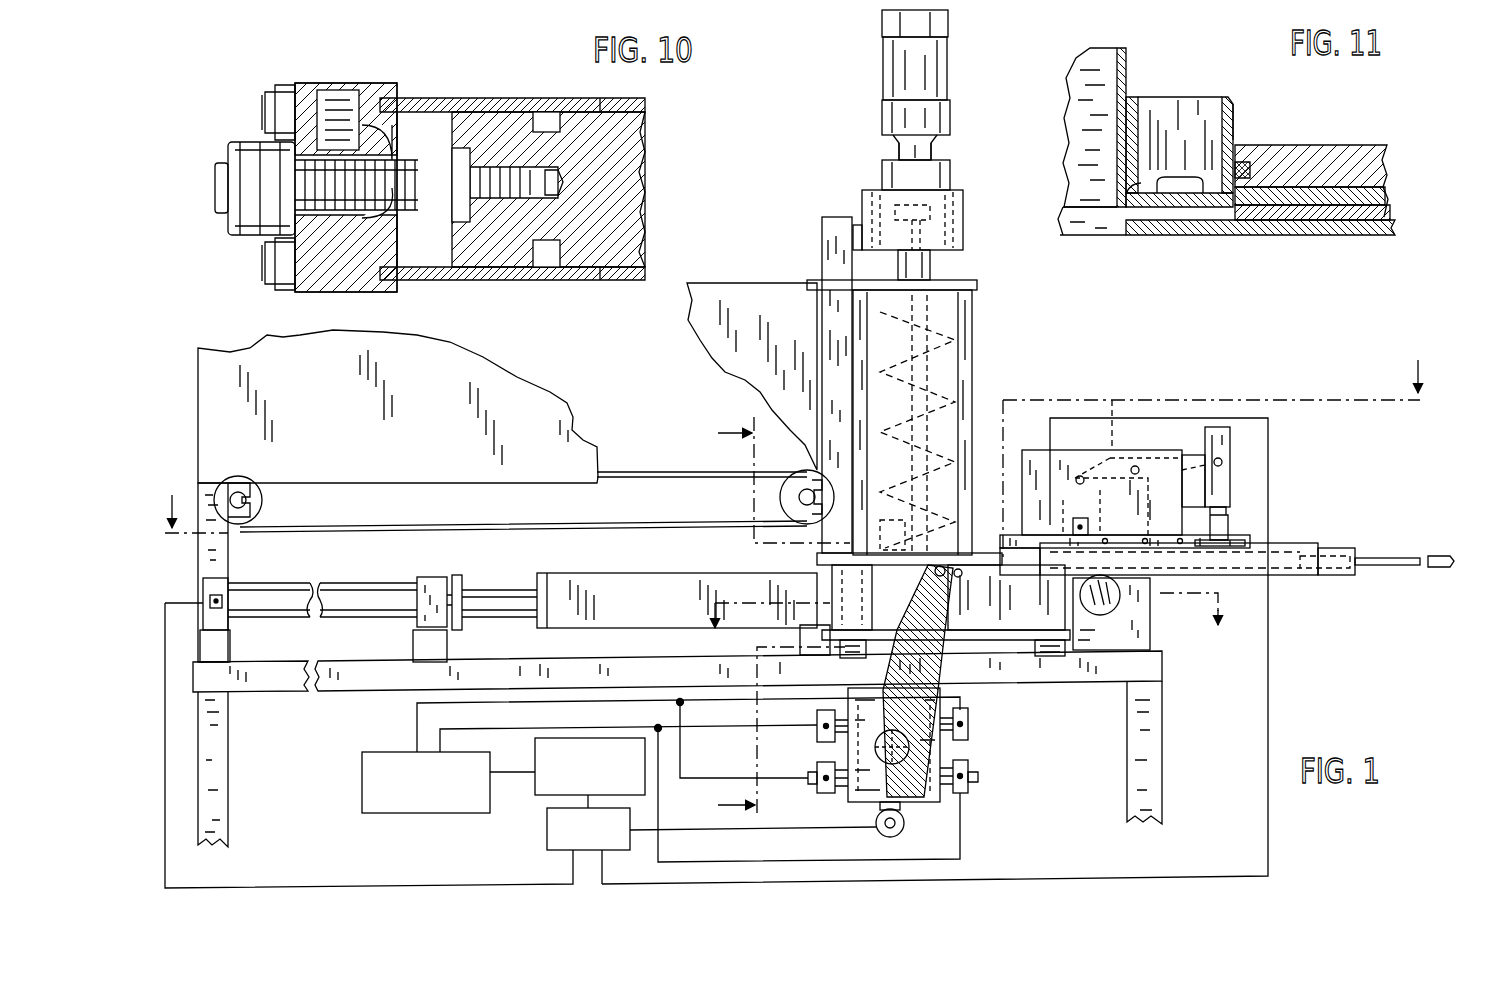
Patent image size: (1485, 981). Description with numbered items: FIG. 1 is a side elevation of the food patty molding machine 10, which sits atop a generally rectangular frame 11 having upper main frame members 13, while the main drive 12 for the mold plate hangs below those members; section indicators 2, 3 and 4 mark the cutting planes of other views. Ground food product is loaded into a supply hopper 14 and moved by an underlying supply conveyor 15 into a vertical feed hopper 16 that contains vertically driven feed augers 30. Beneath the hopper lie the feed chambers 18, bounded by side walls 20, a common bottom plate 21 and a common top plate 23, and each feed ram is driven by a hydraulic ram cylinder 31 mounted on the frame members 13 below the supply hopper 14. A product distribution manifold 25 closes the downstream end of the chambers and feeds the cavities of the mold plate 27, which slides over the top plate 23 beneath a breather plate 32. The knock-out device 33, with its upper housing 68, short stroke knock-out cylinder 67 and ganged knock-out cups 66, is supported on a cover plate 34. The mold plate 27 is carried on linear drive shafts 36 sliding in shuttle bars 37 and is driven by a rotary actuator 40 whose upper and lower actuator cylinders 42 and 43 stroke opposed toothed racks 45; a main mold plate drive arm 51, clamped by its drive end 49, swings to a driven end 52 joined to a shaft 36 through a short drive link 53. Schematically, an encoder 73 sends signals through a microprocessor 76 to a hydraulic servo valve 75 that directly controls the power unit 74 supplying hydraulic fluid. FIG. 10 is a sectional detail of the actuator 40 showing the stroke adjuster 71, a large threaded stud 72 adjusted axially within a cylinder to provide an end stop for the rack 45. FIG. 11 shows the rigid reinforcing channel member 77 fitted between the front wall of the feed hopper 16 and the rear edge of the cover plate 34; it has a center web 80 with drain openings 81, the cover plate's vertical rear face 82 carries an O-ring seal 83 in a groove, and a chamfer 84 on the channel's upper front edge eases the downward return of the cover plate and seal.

In FIG. 1, the section line 2- 2 is at (789, 431).
In FIG. 1, the section line 3- 3 is at (966, 625).
In FIG. 1, the section line 4- 4 is at (771, 617).
In FIG. 1, the patty molding machine 10 is at (982, 392).
In FIG. 1, the frame 11 is at (213, 765).
In FIG. 1, the main drive 12 is at (962, 750).
In FIG. 1, the upper main frame members 13 is at (380, 690).
In FIG. 1, the supply hopper 14 is at (572, 412).
In FIG. 1, the supply conveyor 15 is at (643, 467).
In FIG. 1, the feed hopper 16 is at (960, 310).
In FIG. 11, the feed hopper 16 is at (1128, 70).
In FIG. 1, the feed chambers 18 is at (890, 520).
In FIG. 1, the side walls 20 is at (960, 620).
In FIG. 1, the bottom plate 21 is at (1070, 660).
In FIG. 11, the top plate 23 is at (1208, 234).
In FIG. 1, the product distribution manifold 25 is at (1125, 612).
In FIG. 1, the mold plate 27 is at (1300, 545).
In FIG. 11, the mold plate 27 is at (1320, 205).
In FIG. 1, the feed augers 30 is at (960, 385).
In FIG. 1, the ram cylinder 31 is at (355, 590).
In FIG. 11, the breather plate 32 is at (1325, 185).
In FIG. 1, the knock-out device 33 is at (1172, 438).
In FIG. 11, the cover plate 34 is at (1370, 145).
In FIG. 1, the linear drive shafts 36 is at (1382, 570).
In FIG. 1, the shuttle bar 37 is at (1318, 572).
In FIG. 1, the rotary actuator 40 is at (935, 800).
In FIG. 10, the rotary actuator 40 is at (458, 90).
In FIG. 1, the upper actuator cylinder 42 is at (962, 722).
In FIG. 1, the lower actuator cylinder 43 is at (972, 766).
In FIG. 10, the lower actuator cylinder 43 is at (523, 98).
In FIG. 10, the toothed racks 45 is at (637, 140).
In FIG. 1, the drive end 49 is at (850, 790).
In FIG. 1, the main mold plate drive arm 51 is at (1006, 610).
In FIG. 1, the driven end 52 is at (884, 570).
In FIG. 1, the drive link 53 is at (955, 562).
In FIG. 1, the knock-out cups 66 is at (1240, 535).
In FIG. 1, the knock-out cylinder 67 is at (1114, 398).
In FIG. 1, the upper housing 68 is at (1143, 450).
In FIG. 1, the stroke adjuster 71 is at (810, 775).
In FIG. 10, the stroke adjuster 71 is at (255, 128).
In FIG. 10, the threaded stud 72 is at (393, 218).
In FIG. 1, the encoder 73 is at (905, 835).
In FIG. 1, the power unit 74 is at (362, 780).
In FIG. 1, the hydraulic servo valve 75 is at (535, 781).
In FIG. 1, the microprocessor 76 is at (547, 845).
In FIG. 1, the reinforcing channel member 77 is at (1004, 520).
In FIG. 11, the reinforcing channel member 77 is at (1205, 95).
In FIG. 11, the center web 80 is at (1148, 110).
In FIG. 11, the drain openings 81 is at (1125, 190).
In FIG. 11, the vertical rear face 82 is at (1218, 160).
In FIG. 11, the O-ring seal 83 is at (1250, 162).
In FIG. 11, the chamfer 84 is at (1240, 96).